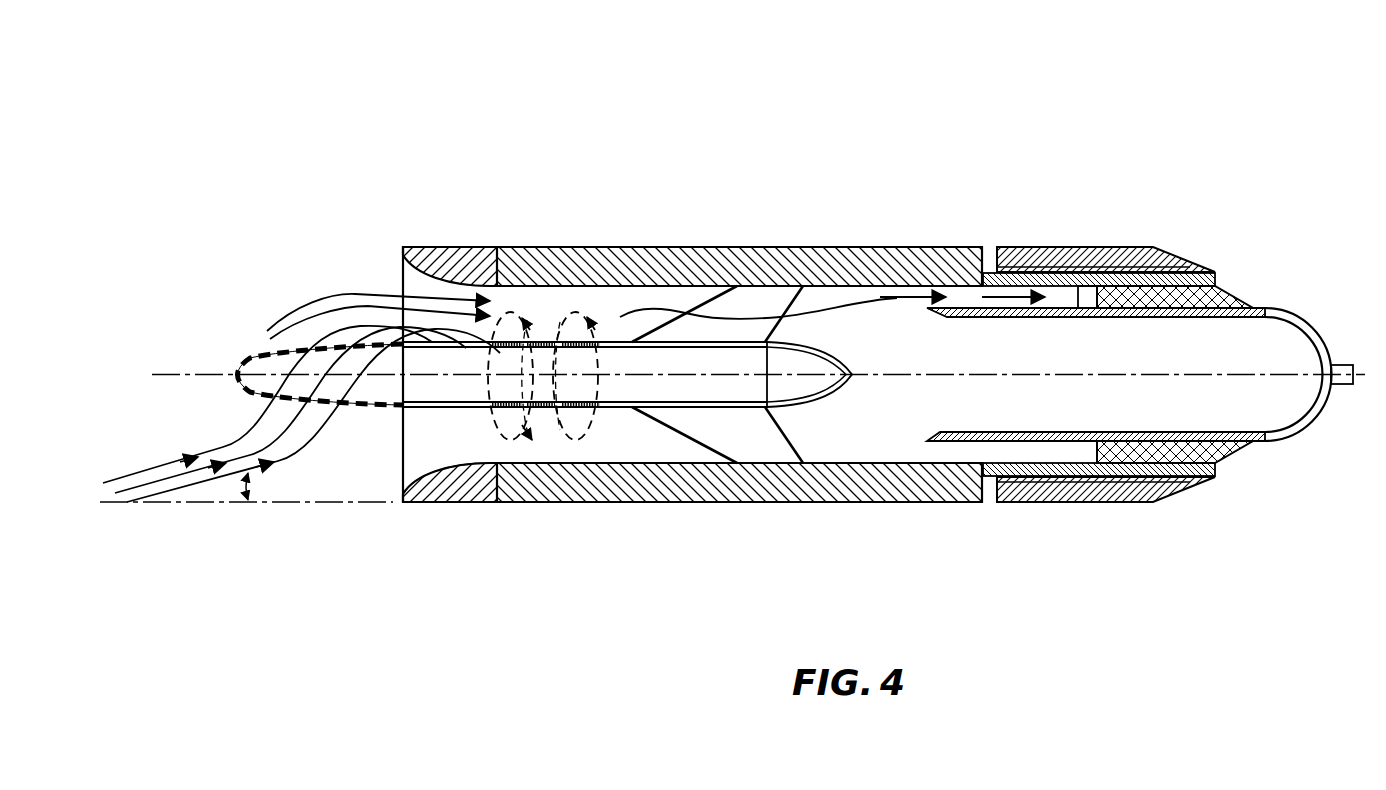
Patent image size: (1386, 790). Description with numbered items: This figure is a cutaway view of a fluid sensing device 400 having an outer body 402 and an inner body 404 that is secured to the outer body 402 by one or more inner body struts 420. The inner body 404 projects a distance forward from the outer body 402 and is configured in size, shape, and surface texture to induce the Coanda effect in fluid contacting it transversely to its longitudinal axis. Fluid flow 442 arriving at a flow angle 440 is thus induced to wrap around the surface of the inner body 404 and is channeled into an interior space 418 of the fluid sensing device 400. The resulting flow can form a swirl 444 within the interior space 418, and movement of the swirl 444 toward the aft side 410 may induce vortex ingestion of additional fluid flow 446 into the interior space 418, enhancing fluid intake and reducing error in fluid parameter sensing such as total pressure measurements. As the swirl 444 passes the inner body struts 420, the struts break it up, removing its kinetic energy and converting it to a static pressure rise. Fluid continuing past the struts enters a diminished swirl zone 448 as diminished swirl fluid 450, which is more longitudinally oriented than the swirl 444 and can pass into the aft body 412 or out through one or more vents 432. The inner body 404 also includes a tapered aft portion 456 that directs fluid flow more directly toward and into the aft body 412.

The fluid sensing device 400 is at (412, 150).
The outer body 402 is at (662, 282).
The inner body 404 is at (440, 405).
The aft side 410 is at (1339, 385).
The aft body 412 is at (1076, 307).
The interior space 418 is at (617, 445).
The inner body struts 420 is at (743, 440).
The vents 432 is at (1077, 452).
The flow angle 440 is at (256, 483).
The fluid flow 442 is at (185, 478).
The swirl 444 is at (551, 320).
The additional fluid flow 446 is at (346, 292).
The diminished swirl zone 448 is at (872, 435).
The diminished swirl fluid 450 is at (888, 297).
The tapered aft portion 456 is at (820, 350).